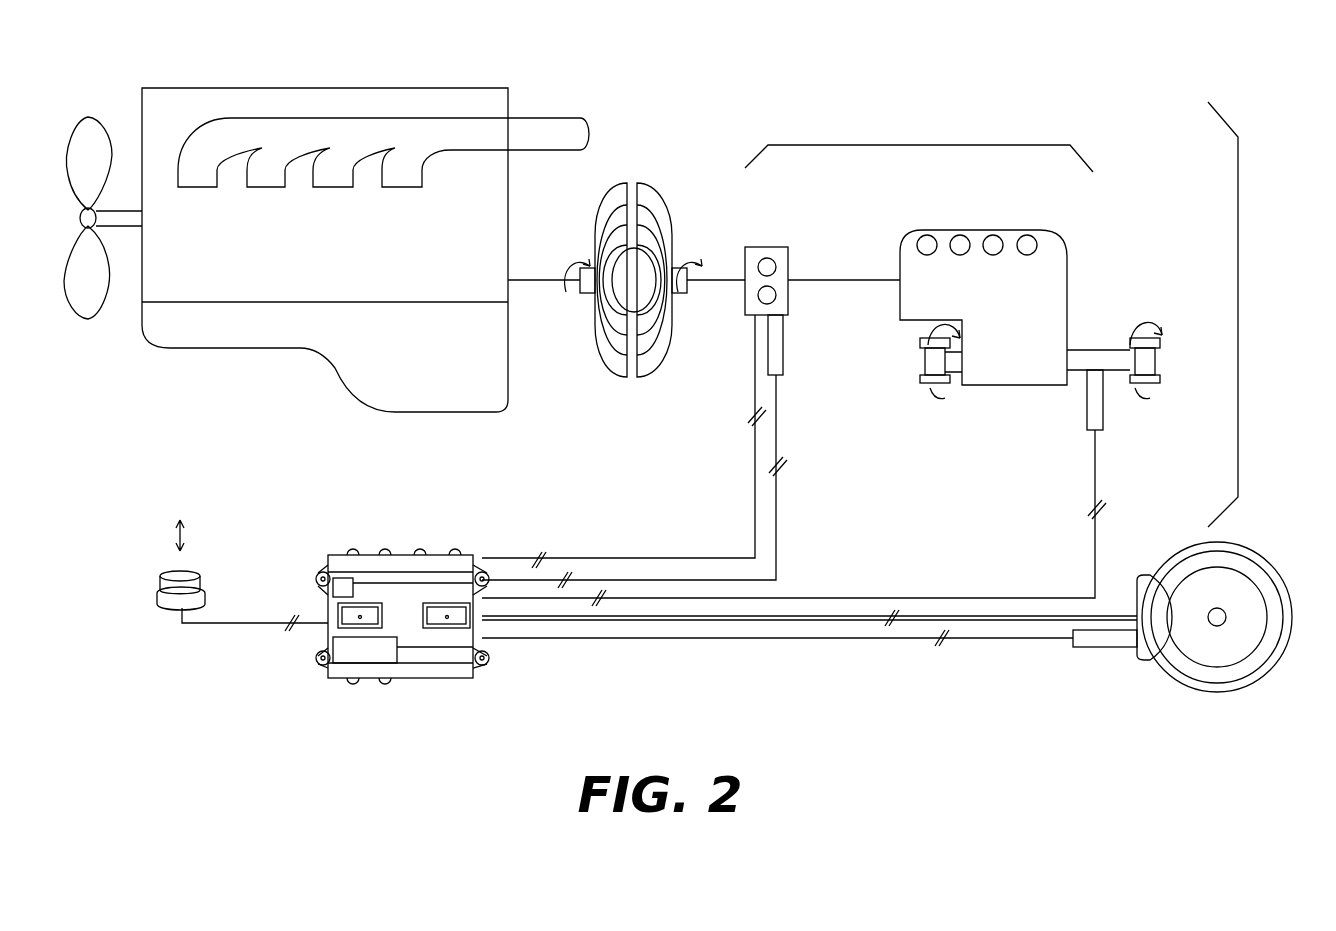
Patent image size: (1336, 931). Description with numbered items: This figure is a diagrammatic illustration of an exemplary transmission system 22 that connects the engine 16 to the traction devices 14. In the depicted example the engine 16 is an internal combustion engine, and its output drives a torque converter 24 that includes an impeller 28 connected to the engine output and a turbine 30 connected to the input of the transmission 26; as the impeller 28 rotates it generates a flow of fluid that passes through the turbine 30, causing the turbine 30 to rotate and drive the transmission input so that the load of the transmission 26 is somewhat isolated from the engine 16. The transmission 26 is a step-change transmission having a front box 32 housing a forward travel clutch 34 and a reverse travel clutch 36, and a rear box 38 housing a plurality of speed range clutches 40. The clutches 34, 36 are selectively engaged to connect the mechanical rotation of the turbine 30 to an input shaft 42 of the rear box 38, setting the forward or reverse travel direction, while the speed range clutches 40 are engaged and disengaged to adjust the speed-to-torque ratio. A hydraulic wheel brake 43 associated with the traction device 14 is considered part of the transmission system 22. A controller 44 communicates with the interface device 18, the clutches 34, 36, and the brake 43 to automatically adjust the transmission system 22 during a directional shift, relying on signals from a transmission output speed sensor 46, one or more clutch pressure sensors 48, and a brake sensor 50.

The traction devices 14 is at (1213, 683).
The engine 16 is at (290, 245).
The interface device 18 is at (150, 597).
The transmission system 22 is at (1238, 293).
The torque converter 24 is at (650, 170).
The transmission 26 is at (938, 145).
The impeller 28 is at (595, 355).
The turbine 30 is at (668, 365).
The front box 32 is at (780, 247).
The forward travel clutch 34 is at (776, 298).
The reverse travel clutch 36 is at (776, 265).
The rear box 38 is at (1060, 255).
The speed range clutches 40 is at (960, 255).
The input shaft 42 is at (856, 272).
The brake 43 is at (1142, 652).
The controller 44 is at (492, 647).
The transmission output speed sensor 46 is at (1087, 408).
The clutch pressure sensors 48 is at (783, 378).
The brake sensor 50 is at (1080, 648).